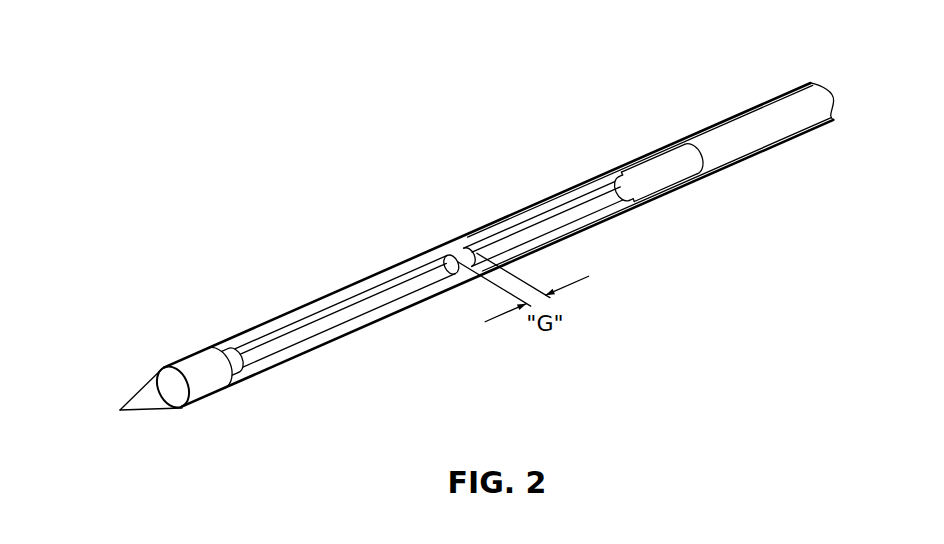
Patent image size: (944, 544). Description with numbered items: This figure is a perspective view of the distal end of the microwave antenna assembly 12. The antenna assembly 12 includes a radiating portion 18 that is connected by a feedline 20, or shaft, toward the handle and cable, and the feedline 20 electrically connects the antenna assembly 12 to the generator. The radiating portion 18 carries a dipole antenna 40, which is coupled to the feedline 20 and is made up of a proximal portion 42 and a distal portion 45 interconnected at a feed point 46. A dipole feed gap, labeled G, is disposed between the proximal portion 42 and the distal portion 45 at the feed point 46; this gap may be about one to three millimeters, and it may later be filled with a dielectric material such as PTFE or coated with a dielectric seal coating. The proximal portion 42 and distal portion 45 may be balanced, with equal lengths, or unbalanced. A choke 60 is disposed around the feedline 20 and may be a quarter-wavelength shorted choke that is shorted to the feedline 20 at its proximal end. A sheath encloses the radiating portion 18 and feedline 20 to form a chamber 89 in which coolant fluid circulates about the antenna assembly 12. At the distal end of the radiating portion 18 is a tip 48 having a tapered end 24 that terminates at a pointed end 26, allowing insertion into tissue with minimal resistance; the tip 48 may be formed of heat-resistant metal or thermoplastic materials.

The antenna assembly 12 is at (436, 185).
The radiating portion 18 is at (302, 275).
The feedline 20 is at (750, 92).
The tapered end 24 is at (154, 382).
The pointed end 26 is at (120, 410).
The dipole antenna 40 is at (576, 230).
The proximal portion 42 is at (545, 215).
The distal portion 45 is at (287, 342).
The feed point 46 is at (451, 264).
The tip 48 is at (147, 402).
The choke 60 is at (723, 131).
The chamber 89 is at (268, 330).